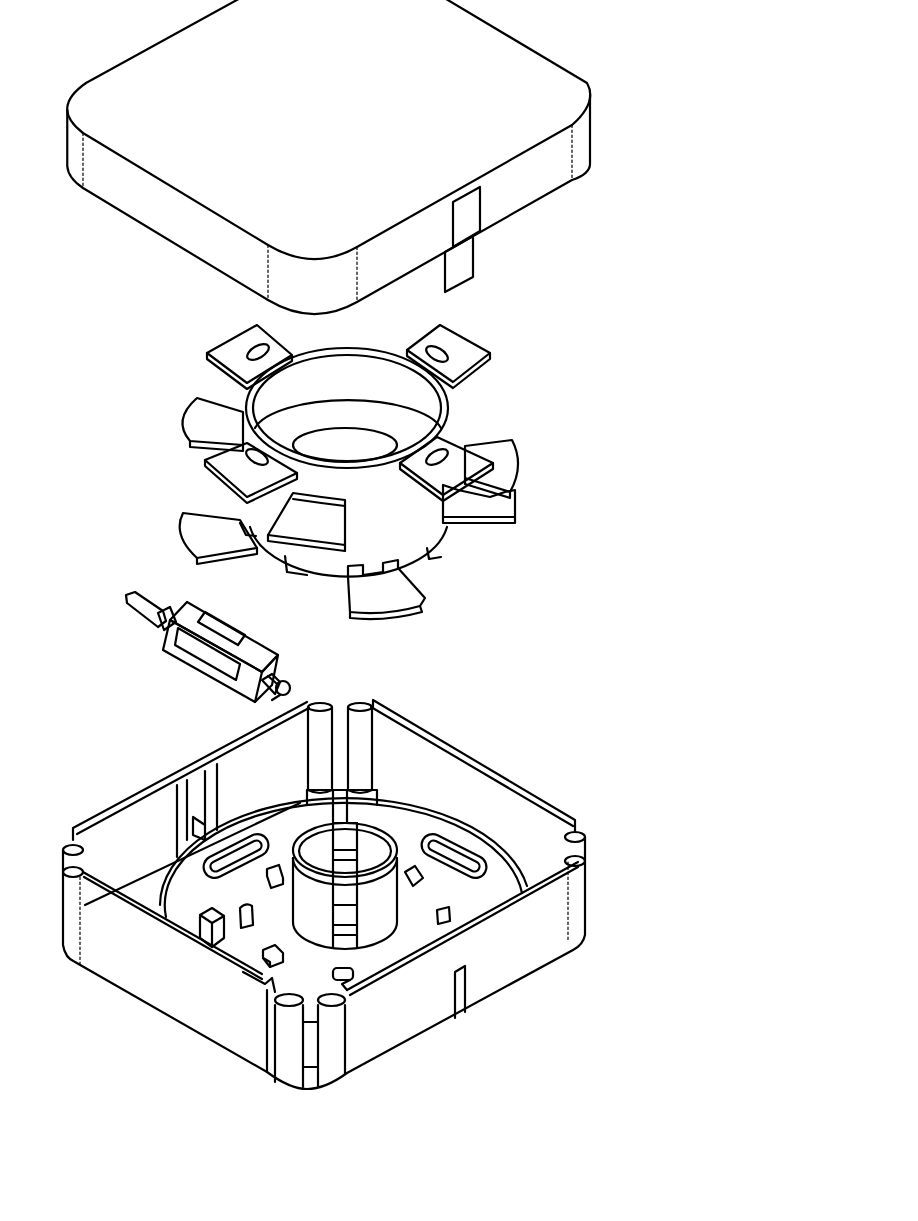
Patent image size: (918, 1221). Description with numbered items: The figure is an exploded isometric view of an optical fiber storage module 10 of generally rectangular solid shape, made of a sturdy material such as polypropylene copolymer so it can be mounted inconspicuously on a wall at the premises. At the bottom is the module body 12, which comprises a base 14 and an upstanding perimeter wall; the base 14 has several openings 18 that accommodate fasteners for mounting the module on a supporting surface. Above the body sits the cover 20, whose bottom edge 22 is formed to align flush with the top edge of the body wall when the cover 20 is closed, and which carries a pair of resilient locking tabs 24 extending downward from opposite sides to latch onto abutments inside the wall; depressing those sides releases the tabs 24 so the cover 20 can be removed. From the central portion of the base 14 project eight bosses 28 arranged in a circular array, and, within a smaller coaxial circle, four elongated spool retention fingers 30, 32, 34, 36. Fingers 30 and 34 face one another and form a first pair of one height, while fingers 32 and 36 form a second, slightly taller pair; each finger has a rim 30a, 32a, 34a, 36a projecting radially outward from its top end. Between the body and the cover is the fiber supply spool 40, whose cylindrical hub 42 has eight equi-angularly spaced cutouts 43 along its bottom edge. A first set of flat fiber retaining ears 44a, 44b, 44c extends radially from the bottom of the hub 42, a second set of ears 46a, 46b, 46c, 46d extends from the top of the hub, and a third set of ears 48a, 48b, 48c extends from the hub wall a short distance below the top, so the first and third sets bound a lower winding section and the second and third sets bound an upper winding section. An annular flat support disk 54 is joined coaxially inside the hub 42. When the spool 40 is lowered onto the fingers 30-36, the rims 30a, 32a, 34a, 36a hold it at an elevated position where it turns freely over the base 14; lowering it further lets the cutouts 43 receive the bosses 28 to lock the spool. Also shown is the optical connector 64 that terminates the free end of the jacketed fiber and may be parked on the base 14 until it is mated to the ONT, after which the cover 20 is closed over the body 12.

The optical fiber storage module 10 is at (705, 355).
The body 12 is at (544, 977).
The base 14 is at (497, 888).
The openings 18 is at (220, 853).
The cover 20 is at (540, 70).
The bottom edge 22 is at (548, 193).
The resilient locking tabs 24 is at (473, 260).
The bosses 28 is at (265, 965).
The spool retention finger 30 is at (370, 848).
The rim 30a is at (398, 850).
The spool retention finger 32 is at (377, 923).
The rim 32a is at (385, 878).
The spool retention finger 34 is at (307, 890).
The rim 34a is at (290, 878).
The spool retention finger 36 is at (333, 820).
The rim 36a is at (323, 843).
The fiber supply spool 40 is at (457, 413).
The cylindrical hub 42 is at (440, 523).
The cutouts 43 is at (302, 568).
The fiber retaining ear 44a is at (192, 538).
The fiber retaining ear 44b is at (388, 618).
The fiber retaining ear 44c is at (510, 503).
The fiber retaining ear 46a is at (228, 343).
The fiber retaining ear 46b is at (228, 468).
The fiber retaining ear 46c is at (457, 457).
The fiber retaining ear 46d is at (467, 347).
The fiber retaining ear 48a is at (188, 420).
The fiber retaining ear 48b is at (293, 535).
The fiber retaining ear 48c is at (503, 462).
The annular flat support disk 54 is at (339, 412).
The optical connector 64 is at (192, 667).